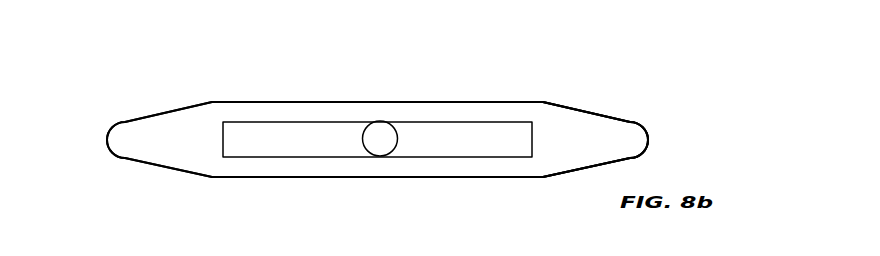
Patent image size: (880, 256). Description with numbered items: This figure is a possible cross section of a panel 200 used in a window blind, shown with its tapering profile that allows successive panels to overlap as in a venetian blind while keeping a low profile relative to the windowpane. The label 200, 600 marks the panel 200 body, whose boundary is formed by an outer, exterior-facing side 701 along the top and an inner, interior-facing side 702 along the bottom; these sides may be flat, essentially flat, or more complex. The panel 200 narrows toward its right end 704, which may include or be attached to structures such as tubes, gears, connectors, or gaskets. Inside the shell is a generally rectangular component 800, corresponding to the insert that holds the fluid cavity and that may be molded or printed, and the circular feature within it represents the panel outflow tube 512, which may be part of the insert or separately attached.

The panel 200 is at (152, 114).
The device housing (alternate embodiment) 600 is at (209, 101).
The exterior-facing side 701 is at (288, 101).
The interior-facing side 702 is at (433, 177).
The right end 704 is at (629, 95).
The rectangular window/panel 800 is at (398, 130).
The panel outflow tube 512 is at (363, 145).